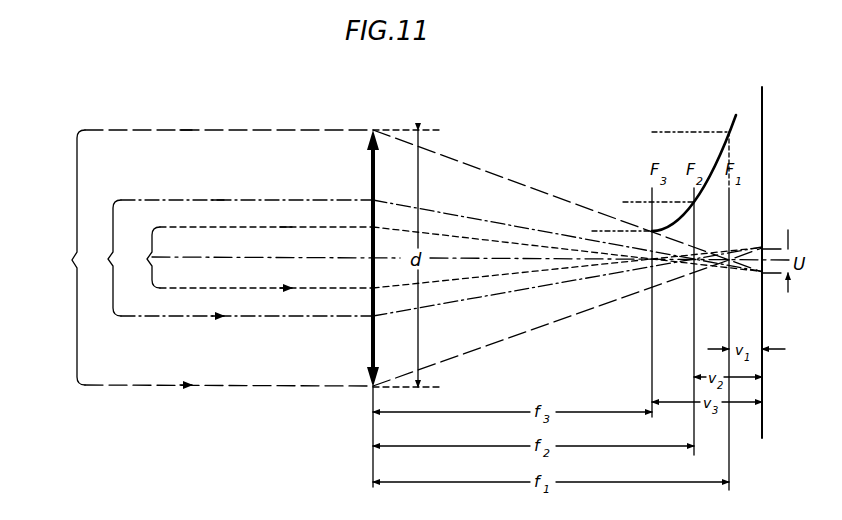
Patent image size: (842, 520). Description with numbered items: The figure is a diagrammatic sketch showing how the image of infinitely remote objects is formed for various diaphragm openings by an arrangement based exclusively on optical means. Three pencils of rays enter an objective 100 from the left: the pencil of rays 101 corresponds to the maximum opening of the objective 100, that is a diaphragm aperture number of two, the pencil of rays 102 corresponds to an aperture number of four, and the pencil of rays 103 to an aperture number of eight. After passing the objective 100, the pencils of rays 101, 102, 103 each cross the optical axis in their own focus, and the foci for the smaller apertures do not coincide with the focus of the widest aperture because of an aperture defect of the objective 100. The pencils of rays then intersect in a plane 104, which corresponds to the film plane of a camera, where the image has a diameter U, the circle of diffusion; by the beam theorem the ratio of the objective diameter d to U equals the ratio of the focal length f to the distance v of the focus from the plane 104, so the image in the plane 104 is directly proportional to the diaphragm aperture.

The objective 100 is at (398, 294).
The pencil of rays 101 is at (401, 258).
The pencil of rays 102 is at (421, 258).
The pencil of rays 103 is at (440, 257).
The plane 104 is at (763, 107).